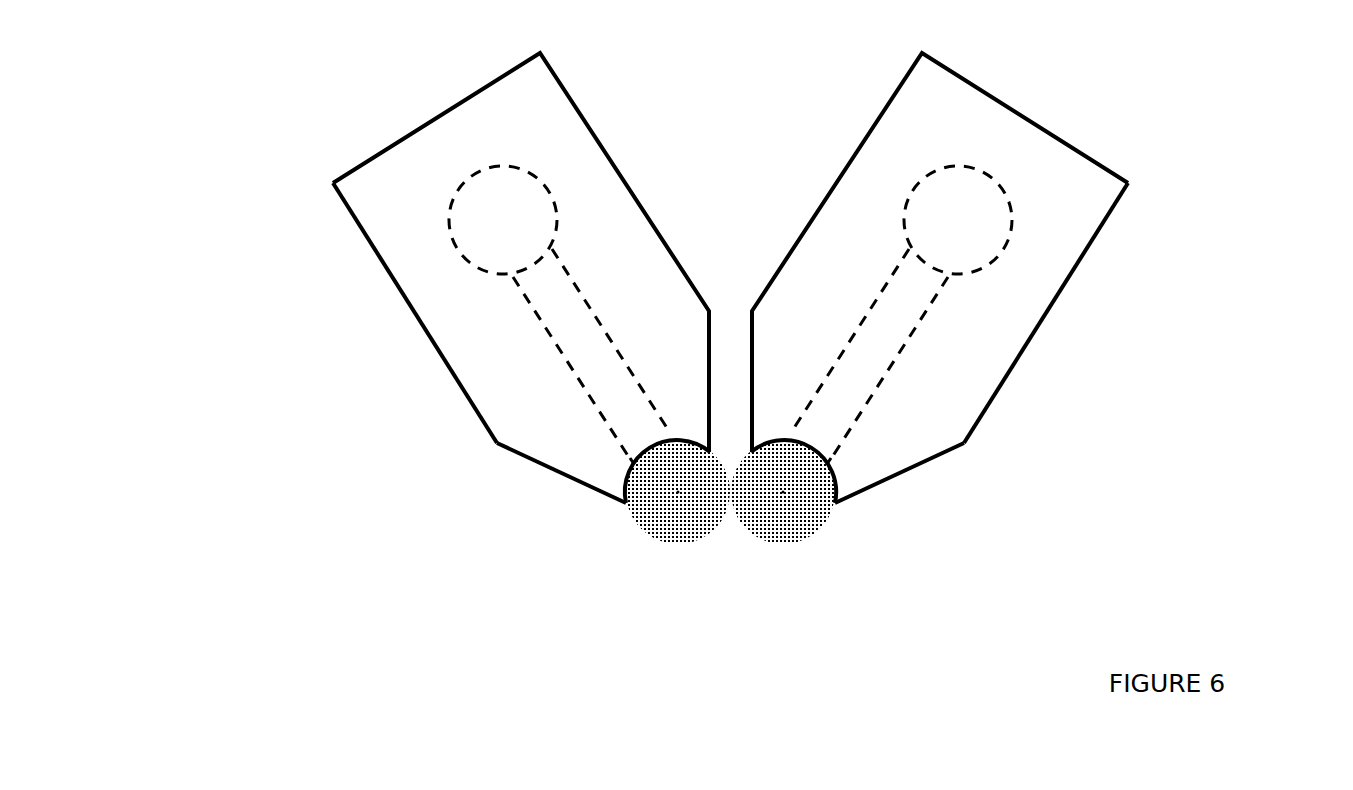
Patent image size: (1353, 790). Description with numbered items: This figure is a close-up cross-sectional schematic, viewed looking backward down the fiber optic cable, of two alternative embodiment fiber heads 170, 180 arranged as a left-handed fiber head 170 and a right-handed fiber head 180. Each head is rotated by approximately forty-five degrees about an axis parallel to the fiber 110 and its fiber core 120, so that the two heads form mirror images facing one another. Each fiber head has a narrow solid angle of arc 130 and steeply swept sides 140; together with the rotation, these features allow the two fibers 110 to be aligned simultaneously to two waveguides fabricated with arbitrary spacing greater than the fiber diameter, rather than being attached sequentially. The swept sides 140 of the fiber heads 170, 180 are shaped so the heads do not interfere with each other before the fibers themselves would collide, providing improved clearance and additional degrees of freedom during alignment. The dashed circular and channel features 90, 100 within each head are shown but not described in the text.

The dashed circular cavity 90 is at (450, 257).
The dashed channel 100 is at (512, 313).
The fiber 110 is at (647, 535).
The fiber core 120 is at (677, 494).
The narrow solid angle of arc 130 is at (617, 475).
The steeply swept sides 140 is at (552, 485).
The left handed fiber head 170 is at (313, 183).
The right handed fiber head 180 is at (1145, 183).